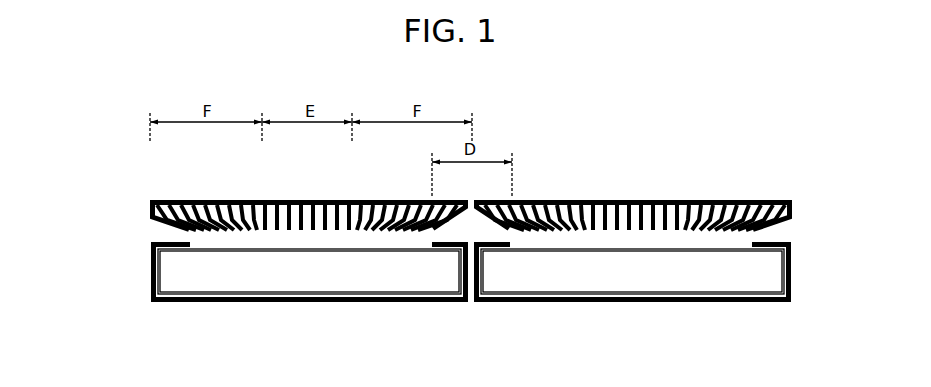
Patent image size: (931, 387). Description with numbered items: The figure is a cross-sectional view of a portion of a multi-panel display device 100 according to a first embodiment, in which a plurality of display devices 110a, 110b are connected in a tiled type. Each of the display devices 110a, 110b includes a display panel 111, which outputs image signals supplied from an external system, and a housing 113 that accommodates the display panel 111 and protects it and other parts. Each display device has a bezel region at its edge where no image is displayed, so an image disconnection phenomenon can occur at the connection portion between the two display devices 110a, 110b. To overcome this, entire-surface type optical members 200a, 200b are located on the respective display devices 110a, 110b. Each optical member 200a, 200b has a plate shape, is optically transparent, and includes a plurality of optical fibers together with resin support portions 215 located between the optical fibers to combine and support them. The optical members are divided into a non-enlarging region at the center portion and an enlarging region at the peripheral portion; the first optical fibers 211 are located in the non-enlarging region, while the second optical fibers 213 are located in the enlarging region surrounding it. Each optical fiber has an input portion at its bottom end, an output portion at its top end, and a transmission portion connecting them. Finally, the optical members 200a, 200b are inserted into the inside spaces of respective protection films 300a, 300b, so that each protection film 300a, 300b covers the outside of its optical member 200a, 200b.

The multi-panel display device 100 is at (743, 143).
The display device 110a is at (185, 316).
The display device 110b is at (752, 312).
The display panel 111 is at (296, 285).
The housing 113 is at (346, 300).
The entire-surface type optical member 200a is at (148, 216).
The entire-surface type optical member 200b is at (797, 203).
The first optical fiber 211 is at (288, 200).
The second optical fiber 213 is at (180, 200).
The resin support portion 215 is at (260, 200).
The protection film 300a is at (349, 200).
The protection film 300b is at (633, 200).